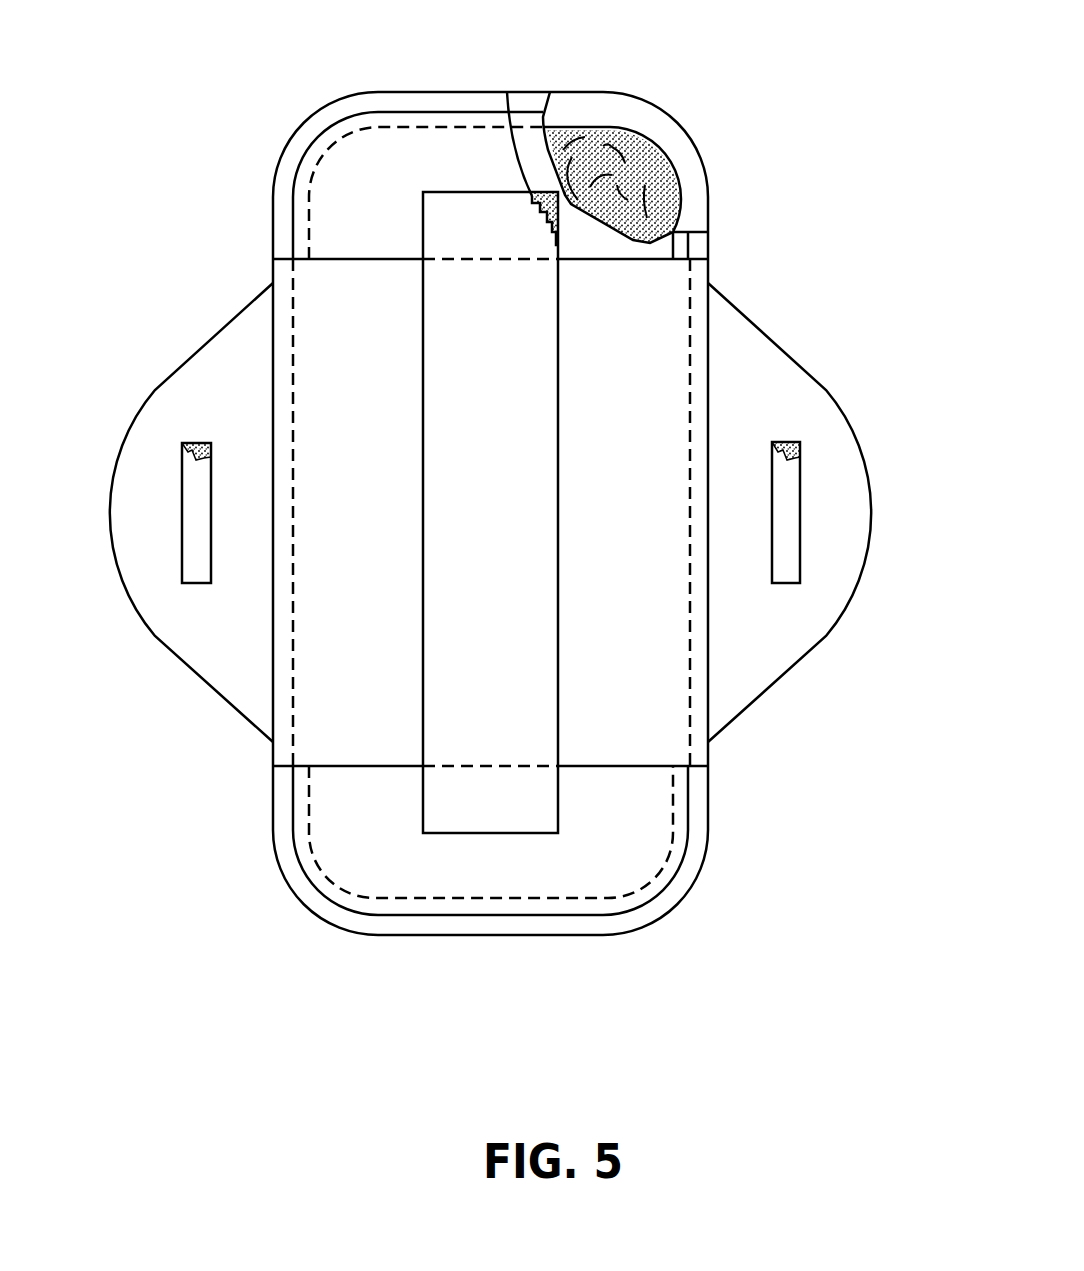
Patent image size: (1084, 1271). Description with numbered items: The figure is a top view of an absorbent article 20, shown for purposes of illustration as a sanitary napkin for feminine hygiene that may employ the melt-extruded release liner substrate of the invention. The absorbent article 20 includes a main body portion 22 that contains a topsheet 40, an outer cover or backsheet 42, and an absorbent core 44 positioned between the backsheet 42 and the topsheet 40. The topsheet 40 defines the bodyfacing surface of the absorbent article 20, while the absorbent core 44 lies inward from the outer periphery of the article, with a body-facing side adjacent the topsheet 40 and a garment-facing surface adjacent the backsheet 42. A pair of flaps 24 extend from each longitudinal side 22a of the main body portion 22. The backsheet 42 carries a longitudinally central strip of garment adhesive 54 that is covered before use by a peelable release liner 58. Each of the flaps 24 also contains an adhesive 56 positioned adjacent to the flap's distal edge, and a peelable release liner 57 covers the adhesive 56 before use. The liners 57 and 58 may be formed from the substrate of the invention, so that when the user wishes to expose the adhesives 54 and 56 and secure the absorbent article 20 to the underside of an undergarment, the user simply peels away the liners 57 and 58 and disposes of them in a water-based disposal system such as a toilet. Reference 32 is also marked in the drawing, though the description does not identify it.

The absorbent article 20 is at (287, 968).
The main body portion 22 is at (247, 174).
The longitudinal side 22a is at (697, 240).
The flaps 24 is at (209, 701).
The peripheral seal line 32 is at (273, 697).
The topsheet 40 is at (592, 103).
The backsheet 42 is at (345, 199).
The absorbent core 44 is at (630, 197).
The garment adhesive 54 is at (533, 197).
The adhesive 56 is at (200, 443).
The peelable release liner 57 is at (190, 550).
The peelable release liner 58 is at (478, 494).